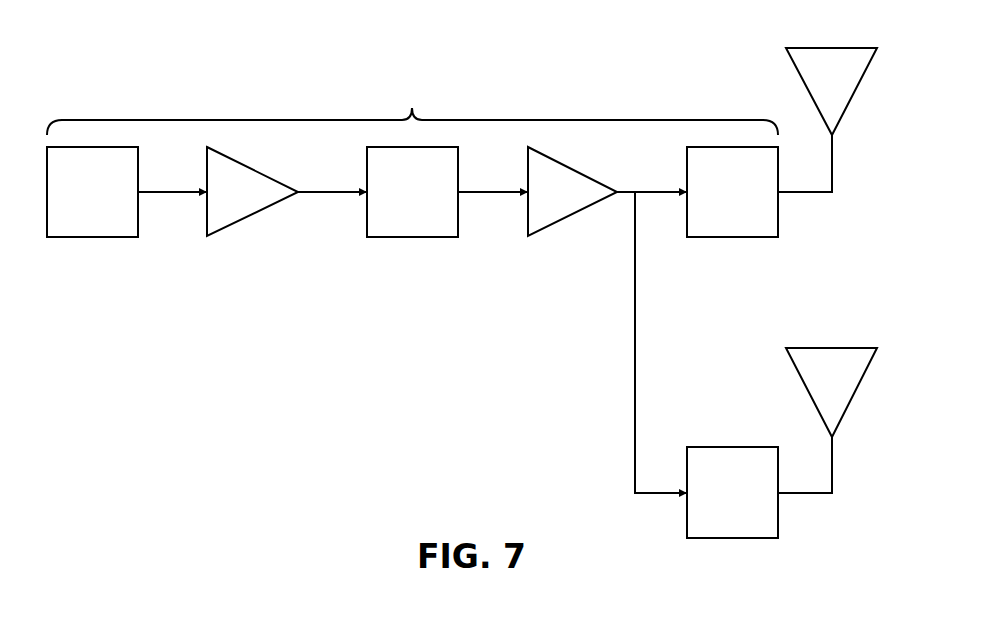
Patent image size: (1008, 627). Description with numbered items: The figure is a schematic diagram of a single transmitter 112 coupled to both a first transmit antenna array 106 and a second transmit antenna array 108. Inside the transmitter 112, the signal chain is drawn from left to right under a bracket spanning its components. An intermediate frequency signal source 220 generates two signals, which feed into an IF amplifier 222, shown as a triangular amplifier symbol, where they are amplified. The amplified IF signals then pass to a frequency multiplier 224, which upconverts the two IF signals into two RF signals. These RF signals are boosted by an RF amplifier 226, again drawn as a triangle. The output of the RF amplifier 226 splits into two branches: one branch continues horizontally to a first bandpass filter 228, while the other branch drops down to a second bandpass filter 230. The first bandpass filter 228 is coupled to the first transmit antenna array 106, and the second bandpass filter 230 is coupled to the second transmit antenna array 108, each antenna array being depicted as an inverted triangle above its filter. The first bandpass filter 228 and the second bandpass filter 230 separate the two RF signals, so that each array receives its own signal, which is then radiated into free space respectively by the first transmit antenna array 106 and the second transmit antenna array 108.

The transmitter 112 is at (412, 105).
The intermediate frequency signal source 220 is at (47, 222).
The IF amplifier 222 is at (207, 222).
The frequency multiplier 224 is at (367, 222).
The RF amplifier 226 is at (528, 222).
The first bandpass filter 228 is at (687, 222).
The second bandpass filter 230 is at (733, 447).
The first transmit antenna array 106 is at (830, 46).
The second transmit antenna array 108 is at (833, 346).